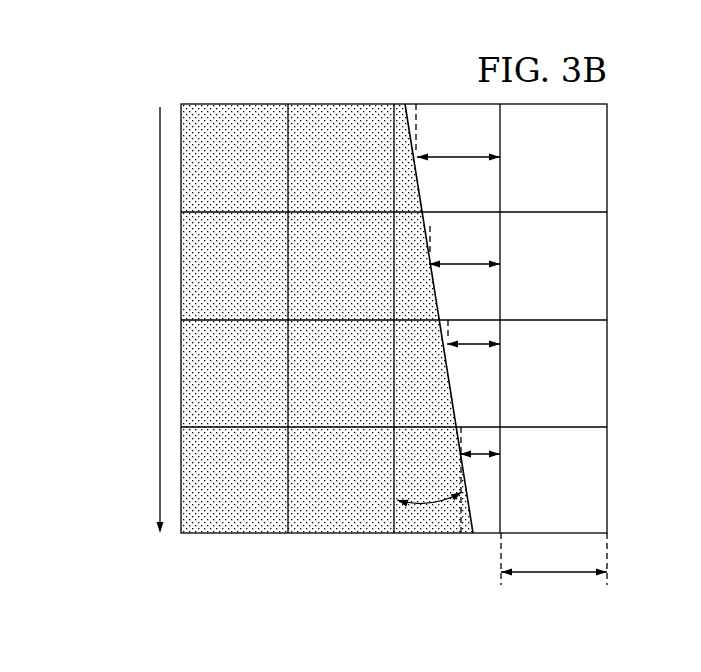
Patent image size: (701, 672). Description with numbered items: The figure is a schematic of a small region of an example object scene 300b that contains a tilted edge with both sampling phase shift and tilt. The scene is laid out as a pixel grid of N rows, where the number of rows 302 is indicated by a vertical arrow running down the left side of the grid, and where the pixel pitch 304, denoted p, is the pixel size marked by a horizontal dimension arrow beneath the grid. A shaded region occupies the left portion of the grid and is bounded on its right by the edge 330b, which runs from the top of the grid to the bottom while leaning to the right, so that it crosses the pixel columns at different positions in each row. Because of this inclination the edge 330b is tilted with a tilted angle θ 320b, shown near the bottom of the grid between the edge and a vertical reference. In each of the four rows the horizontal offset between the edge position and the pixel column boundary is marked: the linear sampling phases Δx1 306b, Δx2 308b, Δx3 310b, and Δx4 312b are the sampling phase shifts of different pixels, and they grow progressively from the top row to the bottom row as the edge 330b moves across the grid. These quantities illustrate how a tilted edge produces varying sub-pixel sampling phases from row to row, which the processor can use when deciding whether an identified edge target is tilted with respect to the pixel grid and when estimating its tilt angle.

The object scene 300b is at (206, 45).
The number of rows 302 is at (158, 318).
The pixel pitch 304 is at (555, 576).
The linear sampling phase Δx1 306b is at (458, 163).
The linear sampling phase Δx2 308b is at (465, 272).
The linear sampling phase Δx3 310b is at (470, 350).
The linear sampling phase Δx4 312b is at (478, 459).
The tilt angle θ 320b is at (430, 505).
The edge 330b is at (418, 243).